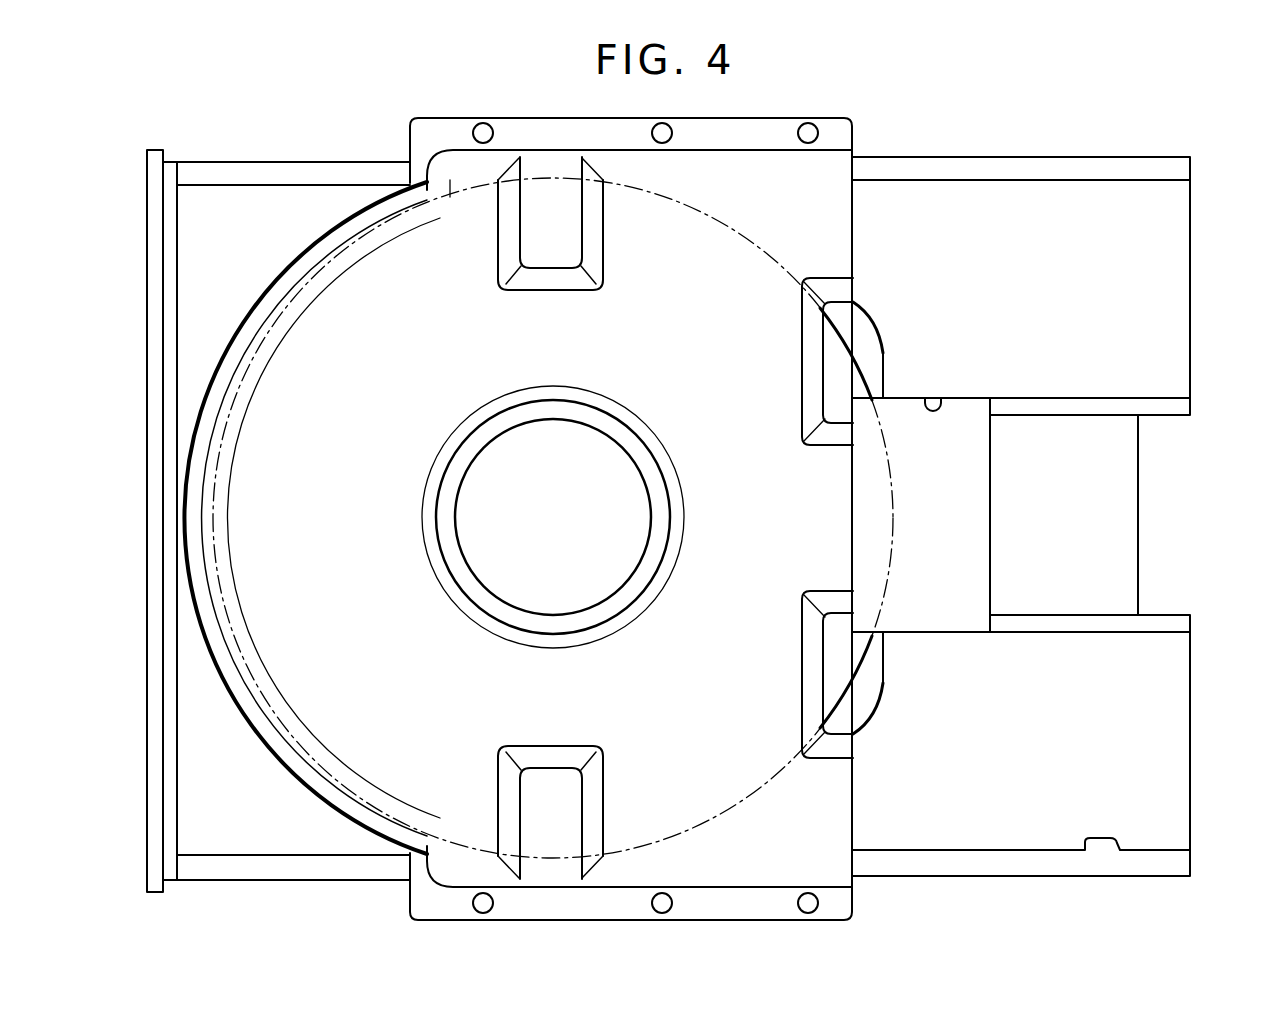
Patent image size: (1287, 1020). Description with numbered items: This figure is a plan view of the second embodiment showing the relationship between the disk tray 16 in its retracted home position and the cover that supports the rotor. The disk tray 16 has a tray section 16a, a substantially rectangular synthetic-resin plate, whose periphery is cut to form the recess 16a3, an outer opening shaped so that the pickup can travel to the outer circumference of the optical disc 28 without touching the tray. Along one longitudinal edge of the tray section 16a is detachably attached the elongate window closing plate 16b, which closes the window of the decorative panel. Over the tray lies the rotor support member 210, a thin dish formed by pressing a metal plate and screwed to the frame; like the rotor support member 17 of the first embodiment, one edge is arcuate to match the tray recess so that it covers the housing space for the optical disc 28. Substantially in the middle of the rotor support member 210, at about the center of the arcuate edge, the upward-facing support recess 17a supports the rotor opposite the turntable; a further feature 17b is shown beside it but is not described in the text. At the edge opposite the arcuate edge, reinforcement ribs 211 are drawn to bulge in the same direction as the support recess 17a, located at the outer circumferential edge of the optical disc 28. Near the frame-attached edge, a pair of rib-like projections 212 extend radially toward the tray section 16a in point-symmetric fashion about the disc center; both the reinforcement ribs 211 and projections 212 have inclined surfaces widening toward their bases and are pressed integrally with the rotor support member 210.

The disk tray 16 is at (1192, 278).
The tray section 16a is at (1043, 156).
The recess 16a3 is at (933, 400).
The window closing plate 16b is at (155, 272).
The rotor support member 17 is at (853, 238).
The support recess 17a is at (538, 625).
The bore of plate 17b is at (637, 570).
The optical disc 28 is at (898, 513).
The rotor support member 210 is at (832, 116).
The reinforcement ribs 211 is at (803, 440).
The projections 212 is at (553, 253).